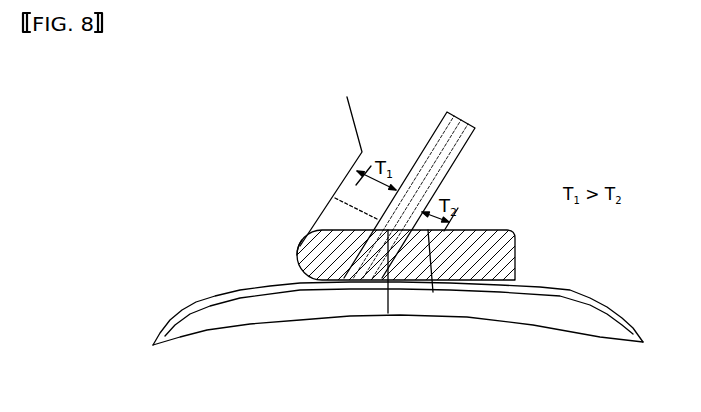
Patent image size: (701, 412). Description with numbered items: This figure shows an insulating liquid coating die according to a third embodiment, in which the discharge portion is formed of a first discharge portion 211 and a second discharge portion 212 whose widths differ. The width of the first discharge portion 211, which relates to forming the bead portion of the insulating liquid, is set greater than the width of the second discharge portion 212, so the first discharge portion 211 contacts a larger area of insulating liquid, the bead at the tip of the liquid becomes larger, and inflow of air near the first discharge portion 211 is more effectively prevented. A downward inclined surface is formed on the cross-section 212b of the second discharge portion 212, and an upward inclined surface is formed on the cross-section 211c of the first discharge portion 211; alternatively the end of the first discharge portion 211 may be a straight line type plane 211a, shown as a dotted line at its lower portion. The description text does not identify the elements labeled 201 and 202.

The inclined plate 201 is at (460, 195).
The base plate 202 is at (388, 313).
The first discharge portion 211 is at (309, 171).
The cross-section 211a is at (362, 210).
The cross-section (upward inclined surface) 211c is at (219, 260).
The second discharge portion 212 is at (428, 240).
The cross-section (downward inclined surface) 212b is at (433, 292).